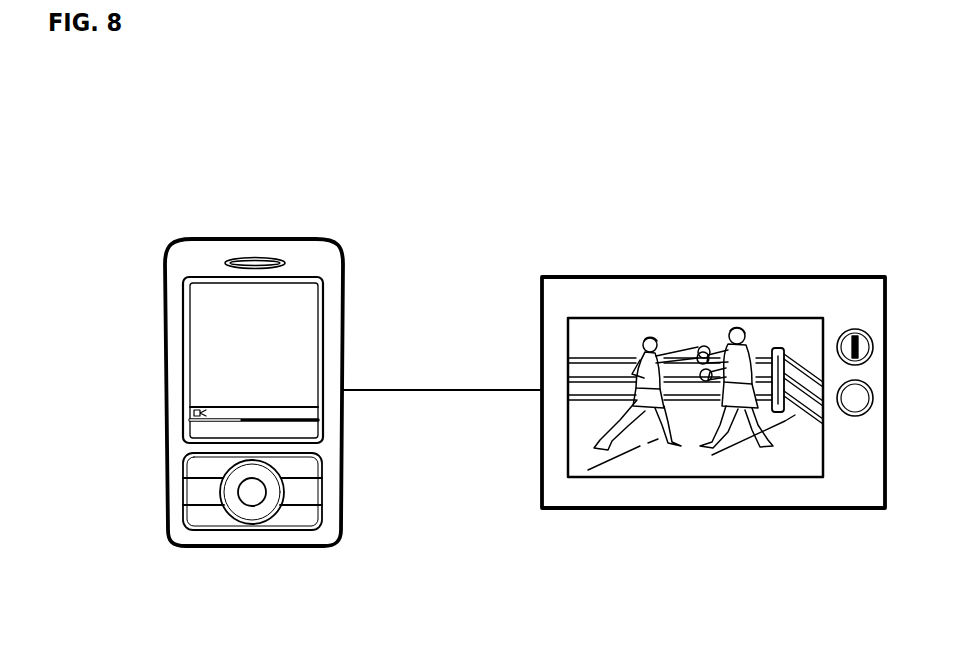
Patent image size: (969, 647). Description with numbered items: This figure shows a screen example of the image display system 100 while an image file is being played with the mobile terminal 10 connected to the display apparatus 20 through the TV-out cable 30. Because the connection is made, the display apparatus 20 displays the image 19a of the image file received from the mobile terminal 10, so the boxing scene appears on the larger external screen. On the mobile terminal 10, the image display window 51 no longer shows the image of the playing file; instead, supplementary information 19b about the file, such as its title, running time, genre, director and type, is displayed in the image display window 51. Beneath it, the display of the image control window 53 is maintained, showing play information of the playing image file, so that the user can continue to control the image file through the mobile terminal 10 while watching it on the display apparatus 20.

The image display system 100 is at (586, 189).
The mobile terminal 10 is at (212, 237).
The supplementary information 19b is at (305, 302).
The image display window 51 is at (186, 375).
The image control window 53 is at (186, 423).
The TV-out cable 30 is at (455, 390).
The display apparatus 20 is at (778, 272).
The image 19a is at (695, 477).